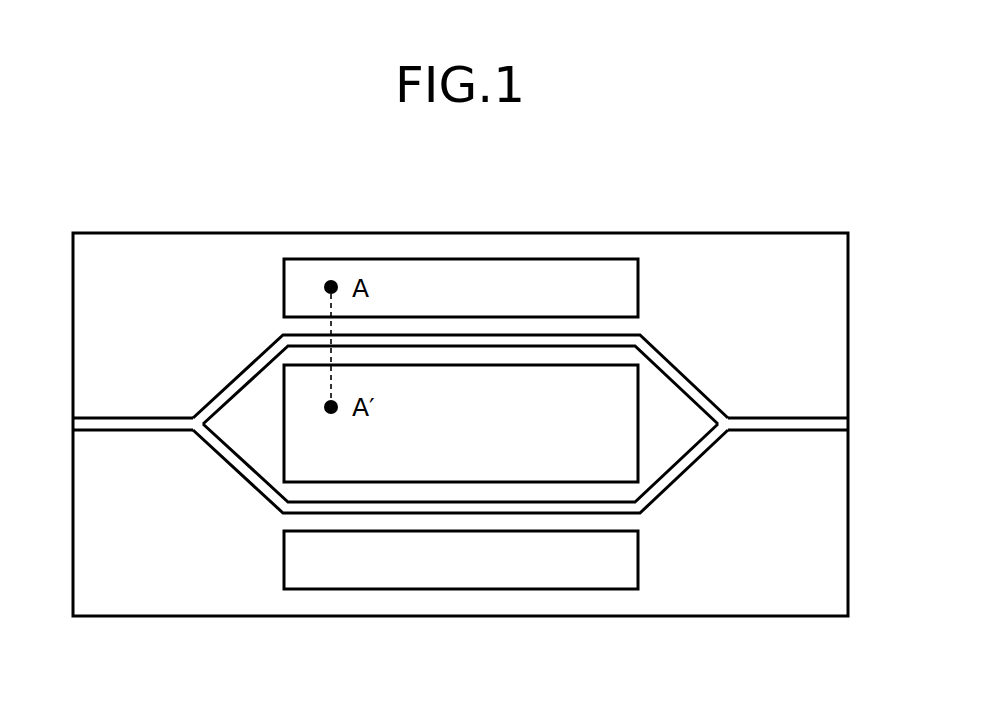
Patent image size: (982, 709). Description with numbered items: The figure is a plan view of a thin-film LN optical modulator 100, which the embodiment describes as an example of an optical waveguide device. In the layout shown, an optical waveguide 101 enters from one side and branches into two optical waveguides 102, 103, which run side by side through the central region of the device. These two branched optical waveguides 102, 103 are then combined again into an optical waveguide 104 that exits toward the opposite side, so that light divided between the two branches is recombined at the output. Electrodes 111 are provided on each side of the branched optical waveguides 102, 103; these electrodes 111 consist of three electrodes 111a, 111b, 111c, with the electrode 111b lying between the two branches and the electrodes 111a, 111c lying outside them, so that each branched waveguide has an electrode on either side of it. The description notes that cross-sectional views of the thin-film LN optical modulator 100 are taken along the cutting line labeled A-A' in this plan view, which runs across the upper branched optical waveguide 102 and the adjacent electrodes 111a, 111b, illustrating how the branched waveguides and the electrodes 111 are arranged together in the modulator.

The thin-film LN optical modulator 100 is at (685, 205).
The optical waveguide 101 is at (125, 417).
The optical waveguide 102 is at (405, 333).
The optical waveguide 103 is at (377, 513).
The optical waveguide 104 is at (770, 417).
The electrodes 111 is at (517, 410).
The electrode 111a is at (542, 280).
The electrode 111b is at (612, 410).
The electrode 111c is at (563, 567).